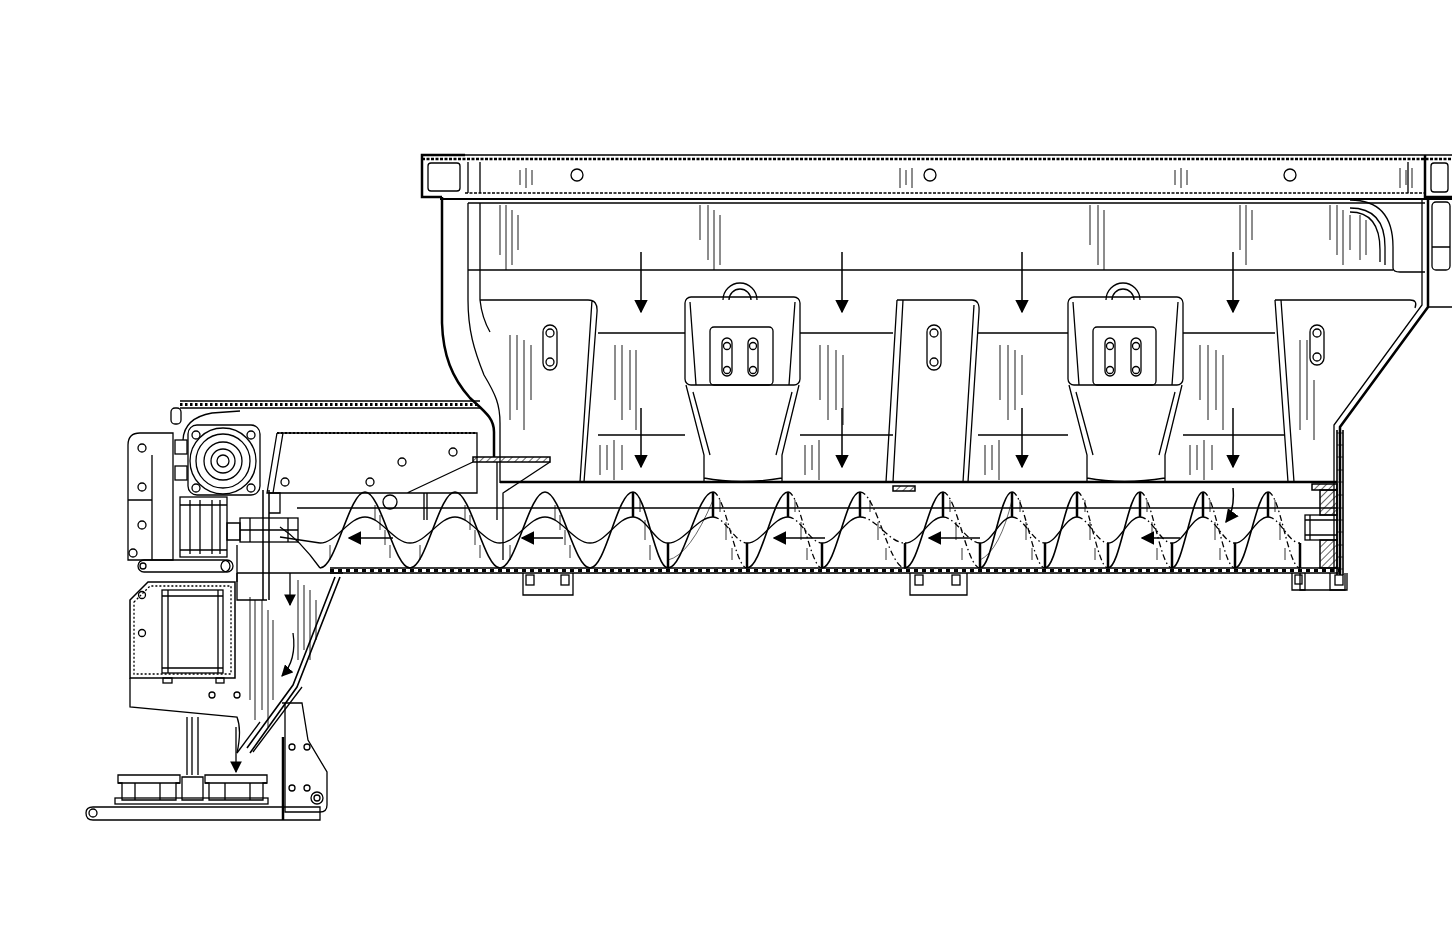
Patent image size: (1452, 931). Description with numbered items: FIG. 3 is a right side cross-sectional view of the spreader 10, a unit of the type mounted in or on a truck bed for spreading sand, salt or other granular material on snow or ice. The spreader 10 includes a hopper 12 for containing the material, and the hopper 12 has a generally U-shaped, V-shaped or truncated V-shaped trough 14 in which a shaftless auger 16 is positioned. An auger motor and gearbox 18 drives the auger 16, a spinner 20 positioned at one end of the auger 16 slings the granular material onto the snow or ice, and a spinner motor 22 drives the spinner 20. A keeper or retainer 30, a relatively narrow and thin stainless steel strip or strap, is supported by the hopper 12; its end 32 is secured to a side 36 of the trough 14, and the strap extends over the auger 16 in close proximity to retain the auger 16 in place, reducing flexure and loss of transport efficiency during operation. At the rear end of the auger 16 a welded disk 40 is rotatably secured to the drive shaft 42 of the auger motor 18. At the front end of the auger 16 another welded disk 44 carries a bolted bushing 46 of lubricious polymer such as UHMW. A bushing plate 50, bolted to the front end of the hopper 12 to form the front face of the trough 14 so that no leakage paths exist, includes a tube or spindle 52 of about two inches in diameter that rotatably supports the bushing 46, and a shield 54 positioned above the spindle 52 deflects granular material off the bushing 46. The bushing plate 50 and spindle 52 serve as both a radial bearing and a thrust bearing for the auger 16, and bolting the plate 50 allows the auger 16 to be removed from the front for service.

The spreader 10 is at (210, 104).
The hopper 12 is at (1150, 156).
The trough 14 is at (806, 576).
The shaftless auger 16 is at (600, 553).
The auger motor and gearbox 18 is at (230, 428).
The spinner 20 is at (152, 776).
The spinner motor 22 is at (170, 645).
The keeper or retainer 30 is at (948, 486).
The end of keeper 32 is at (1003, 544).
The side of trough 36 is at (708, 553).
The disk 40 is at (280, 503).
The drive shaft 42 is at (298, 553).
The disk 44 is at (1322, 563).
The bushing 46 is at (1336, 505).
The bushing plate 50 is at (1342, 470).
The spindle or tube 52 is at (1336, 535).
The shield 54 is at (1325, 483).